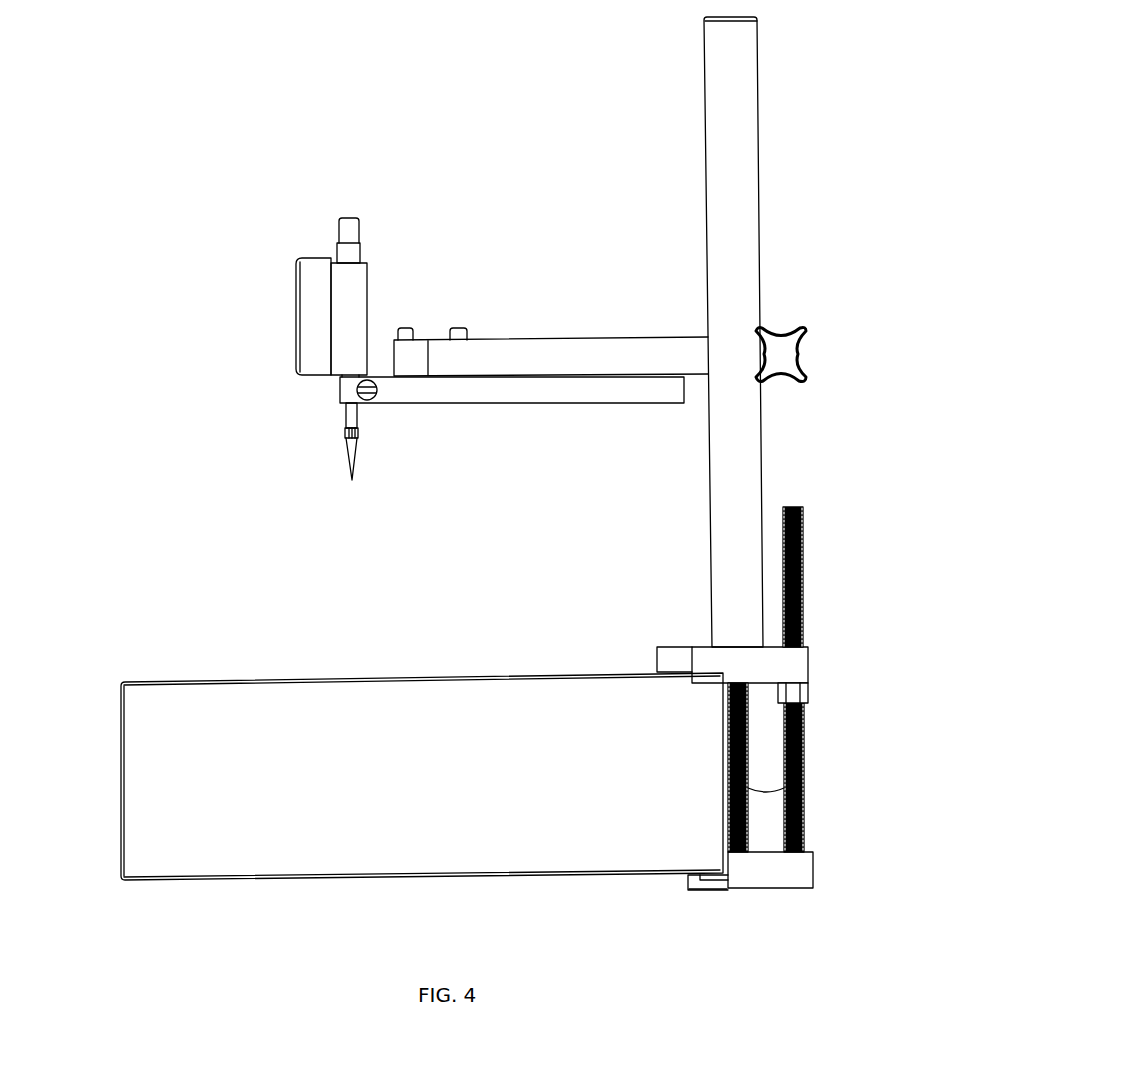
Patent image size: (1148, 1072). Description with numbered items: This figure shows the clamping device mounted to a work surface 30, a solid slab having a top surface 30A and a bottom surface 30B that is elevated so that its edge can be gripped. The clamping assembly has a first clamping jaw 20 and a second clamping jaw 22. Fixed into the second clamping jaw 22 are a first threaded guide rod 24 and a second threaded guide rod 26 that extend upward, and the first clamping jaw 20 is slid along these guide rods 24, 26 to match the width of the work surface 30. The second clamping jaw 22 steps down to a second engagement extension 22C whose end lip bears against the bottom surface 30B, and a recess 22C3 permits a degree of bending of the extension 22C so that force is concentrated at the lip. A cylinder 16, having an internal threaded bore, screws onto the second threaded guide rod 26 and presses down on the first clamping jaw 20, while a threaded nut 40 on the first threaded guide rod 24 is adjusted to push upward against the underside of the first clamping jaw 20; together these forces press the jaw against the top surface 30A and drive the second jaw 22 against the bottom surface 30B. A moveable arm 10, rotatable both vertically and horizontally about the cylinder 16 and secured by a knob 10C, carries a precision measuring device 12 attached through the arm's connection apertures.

The moveable arm 10 is at (543, 332).
The clamp knob 10C is at (781, 343).
The precision measuring device 12 is at (265, 301).
The cylinder 16 is at (757, 125).
The first clamping jaw 20 is at (808, 668).
The second clamping jaw 22 is at (813, 870).
The second engagement extension 22C is at (691, 908).
The recess 22C3 is at (715, 877).
The first threaded guide rod 24 is at (803, 555).
The second threaded guide rod 26 is at (805, 778).
The work surface 30 is at (184, 668).
The top surface 30A is at (430, 675).
The bottom surface 30B is at (232, 880).
The threaded nut 40 is at (798, 693).